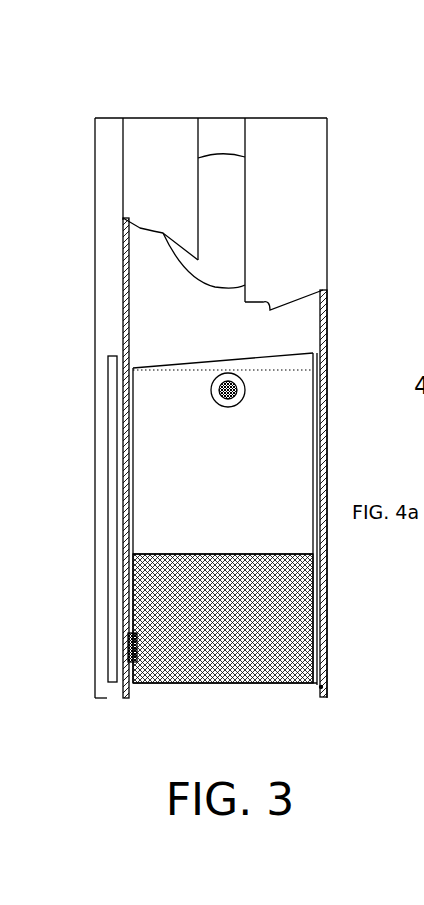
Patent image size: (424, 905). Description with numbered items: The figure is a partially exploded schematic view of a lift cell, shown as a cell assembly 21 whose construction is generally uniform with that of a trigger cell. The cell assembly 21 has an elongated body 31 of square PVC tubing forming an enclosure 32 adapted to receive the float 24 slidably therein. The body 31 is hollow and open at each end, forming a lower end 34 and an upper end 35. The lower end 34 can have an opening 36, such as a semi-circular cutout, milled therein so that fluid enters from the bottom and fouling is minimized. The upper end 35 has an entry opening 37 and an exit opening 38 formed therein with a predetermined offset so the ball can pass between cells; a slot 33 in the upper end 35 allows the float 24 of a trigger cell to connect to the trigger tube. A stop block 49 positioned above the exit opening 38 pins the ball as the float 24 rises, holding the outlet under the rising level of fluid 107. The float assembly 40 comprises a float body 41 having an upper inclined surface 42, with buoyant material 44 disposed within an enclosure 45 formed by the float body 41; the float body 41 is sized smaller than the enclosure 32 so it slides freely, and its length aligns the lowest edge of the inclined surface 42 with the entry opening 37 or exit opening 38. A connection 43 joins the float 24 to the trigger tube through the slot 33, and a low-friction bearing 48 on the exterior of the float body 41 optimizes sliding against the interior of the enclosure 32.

The cell assembly 21 is at (318, 86).
The float 24 is at (315, 430).
The elongated body 31 is at (95, 500).
The enclosure 32 is at (312, 312).
The slot 33 is at (198, 228).
The lower end 34 is at (124, 700).
The upper end 35 is at (122, 117).
The opening 36 is at (325, 670).
The entry opening 37 is at (225, 157).
The exit opening 38 is at (133, 367).
The float assembly 40 is at (240, 480).
The float body 41 is at (108, 365).
The upper inclined surface 42 is at (290, 357).
The connection 43 is at (236, 404).
The buoyant material 44 is at (293, 683).
The enclosure 45 is at (300, 655).
The bearing 48 is at (137, 650).
The stop block 49 is at (140, 237).
The fluid 107 is at (321, 687).